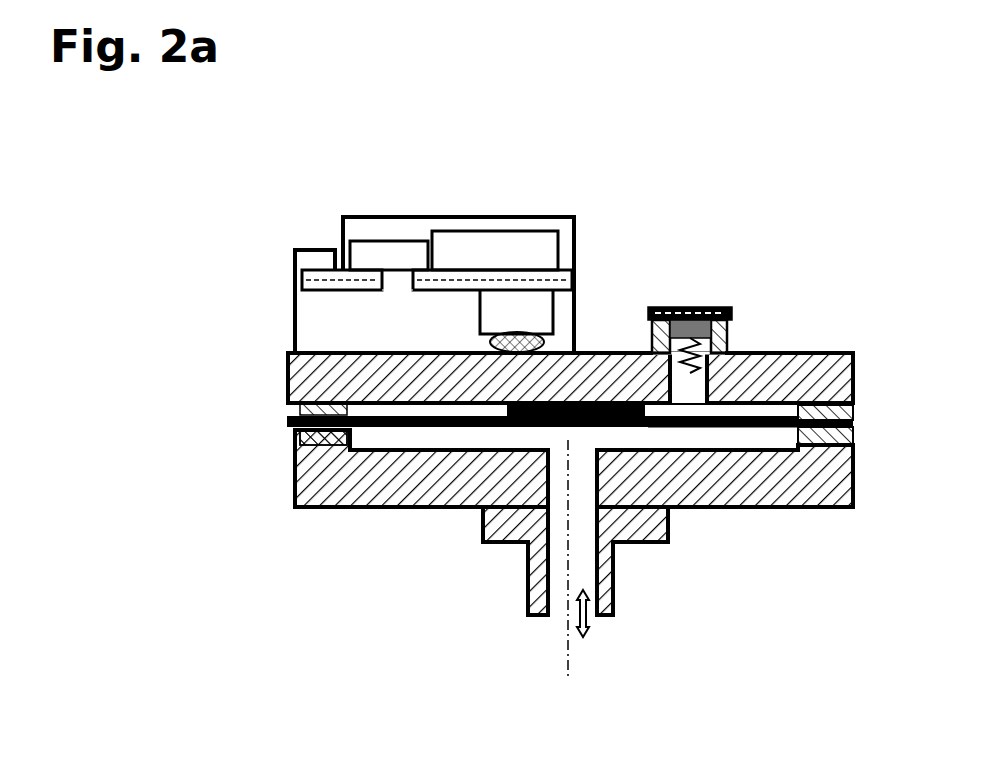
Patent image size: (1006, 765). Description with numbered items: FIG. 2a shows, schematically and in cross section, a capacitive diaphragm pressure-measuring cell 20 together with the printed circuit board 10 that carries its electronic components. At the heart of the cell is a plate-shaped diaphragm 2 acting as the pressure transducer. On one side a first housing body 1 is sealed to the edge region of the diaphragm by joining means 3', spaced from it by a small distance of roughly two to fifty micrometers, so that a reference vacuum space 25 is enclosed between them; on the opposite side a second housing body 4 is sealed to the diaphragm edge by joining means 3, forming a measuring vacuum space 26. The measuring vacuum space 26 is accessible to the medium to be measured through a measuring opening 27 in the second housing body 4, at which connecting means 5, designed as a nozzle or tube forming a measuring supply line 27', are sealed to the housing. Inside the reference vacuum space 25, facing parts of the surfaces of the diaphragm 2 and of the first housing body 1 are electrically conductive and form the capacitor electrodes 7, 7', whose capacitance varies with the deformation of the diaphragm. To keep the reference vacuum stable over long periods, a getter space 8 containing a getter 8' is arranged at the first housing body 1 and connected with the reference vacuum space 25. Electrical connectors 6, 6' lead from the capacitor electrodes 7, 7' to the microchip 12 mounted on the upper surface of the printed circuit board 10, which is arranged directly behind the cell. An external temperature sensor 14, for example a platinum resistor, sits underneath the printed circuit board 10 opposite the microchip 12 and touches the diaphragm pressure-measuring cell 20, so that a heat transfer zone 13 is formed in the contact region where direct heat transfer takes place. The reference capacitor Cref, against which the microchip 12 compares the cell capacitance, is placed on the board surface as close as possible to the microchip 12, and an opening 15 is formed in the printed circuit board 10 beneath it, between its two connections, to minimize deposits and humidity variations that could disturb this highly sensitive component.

The first housing body 1 is at (333, 353).
The diaphragm 2 is at (770, 418).
The joining means 3 is at (881, 449).
The joining means 3' is at (884, 400).
The second housing body 4 is at (400, 483).
The connecting means 5 is at (650, 540).
The electrical connector 6 is at (262, 268).
The electrical connector 6' is at (479, 235).
The capacitor electrode 7 is at (570, 299).
The capacitor electrode 7' is at (391, 545).
The getter space 8 is at (726, 294).
The getter 8' is at (725, 273).
The printed circuit board 10 is at (313, 278).
The microchip 12 is at (482, 252).
The heat transfer zone 13 is at (512, 342).
The temperature sensor 14 is at (530, 313).
The opening 15 is at (393, 285).
The diaphragm pressure-measuring cell 20 is at (250, 503).
The reference vacuum space 25 is at (745, 413).
The measuring vacuum space 26 is at (785, 500).
The measuring opening 27 is at (508, 590).
The measuring supply line 27' is at (555, 578).
The reference capacitor Cref is at (402, 262).